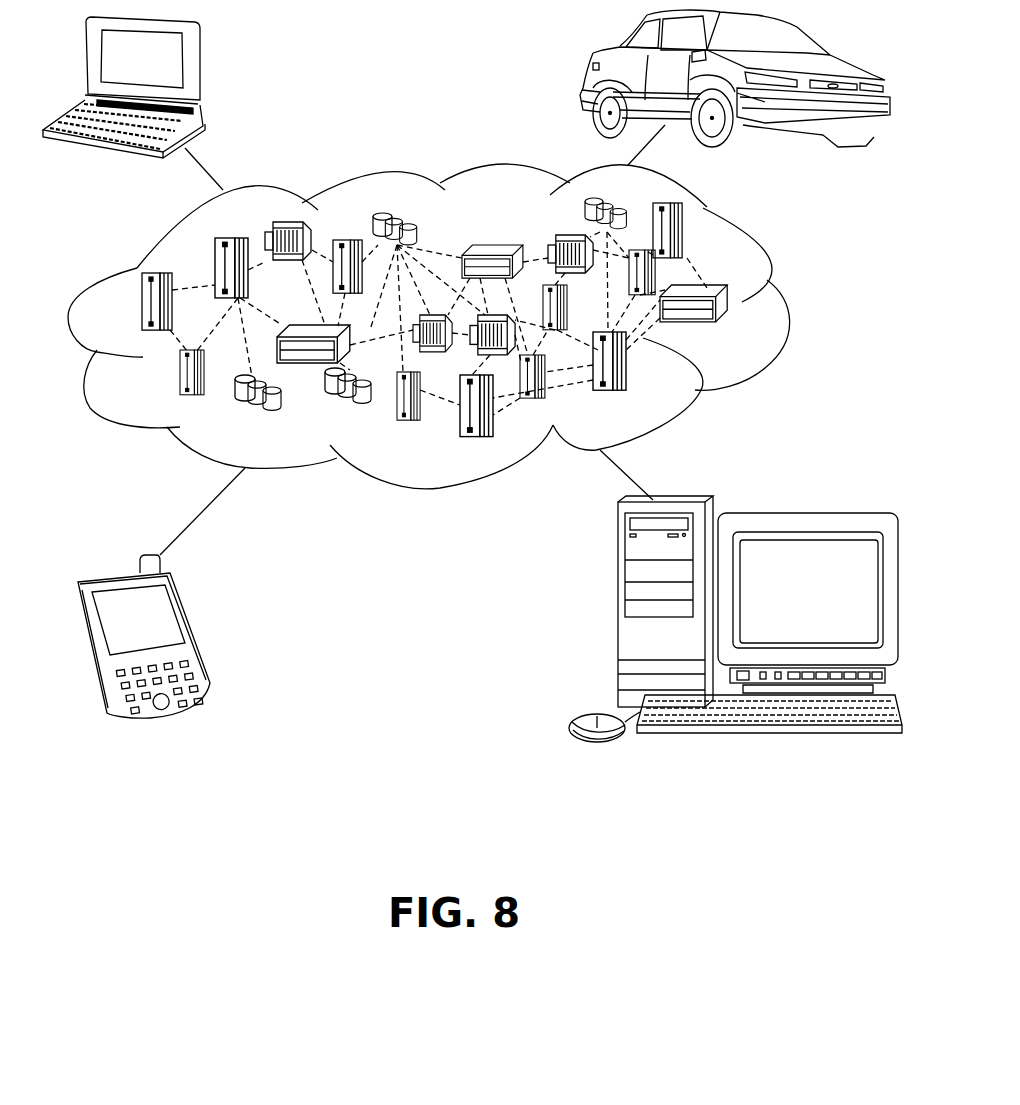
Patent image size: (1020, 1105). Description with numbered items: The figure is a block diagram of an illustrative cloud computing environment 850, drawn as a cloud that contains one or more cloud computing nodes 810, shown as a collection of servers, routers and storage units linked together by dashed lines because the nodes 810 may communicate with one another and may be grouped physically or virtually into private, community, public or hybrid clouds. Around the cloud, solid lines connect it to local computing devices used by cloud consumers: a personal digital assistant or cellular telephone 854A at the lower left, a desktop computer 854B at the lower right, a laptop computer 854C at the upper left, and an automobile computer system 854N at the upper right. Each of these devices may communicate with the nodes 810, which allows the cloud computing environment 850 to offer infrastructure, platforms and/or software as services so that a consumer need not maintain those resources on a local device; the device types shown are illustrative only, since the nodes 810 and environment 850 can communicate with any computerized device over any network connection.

The laptop computer 854C is at (200, 65).
The automobile computer system 854N is at (590, 63).
The cloud computing environment 850 is at (772, 263).
The cloud computing nodes 810 is at (758, 331).
The personal digital assistant (PDA) or cellular telephone 854A is at (190, 633).
The desktop computer 854B is at (617, 613).